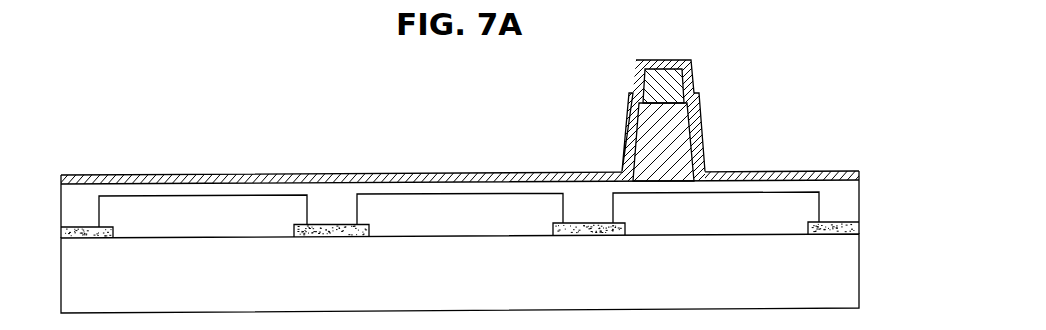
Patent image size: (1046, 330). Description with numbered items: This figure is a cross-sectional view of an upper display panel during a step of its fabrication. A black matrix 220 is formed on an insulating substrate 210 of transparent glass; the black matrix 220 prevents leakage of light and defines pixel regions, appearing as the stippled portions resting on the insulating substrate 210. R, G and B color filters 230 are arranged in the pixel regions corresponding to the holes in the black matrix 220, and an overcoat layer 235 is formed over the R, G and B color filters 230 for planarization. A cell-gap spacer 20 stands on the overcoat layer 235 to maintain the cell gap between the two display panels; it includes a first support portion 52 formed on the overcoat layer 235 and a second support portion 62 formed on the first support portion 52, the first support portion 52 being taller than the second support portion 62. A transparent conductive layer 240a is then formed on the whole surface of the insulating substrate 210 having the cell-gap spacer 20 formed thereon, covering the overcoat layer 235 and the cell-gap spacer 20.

The cell-gap spacer 20 is at (660, 120).
The first support portion 52 is at (673, 118).
The second support portion 62 is at (690, 82).
The insulating substrate 210 is at (848, 272).
The black matrix 220 is at (848, 228).
The R, G and B color filters 230 is at (749, 222).
The overcoat layer 235 is at (848, 188).
The transparent conductive layer 240a is at (858, 175).